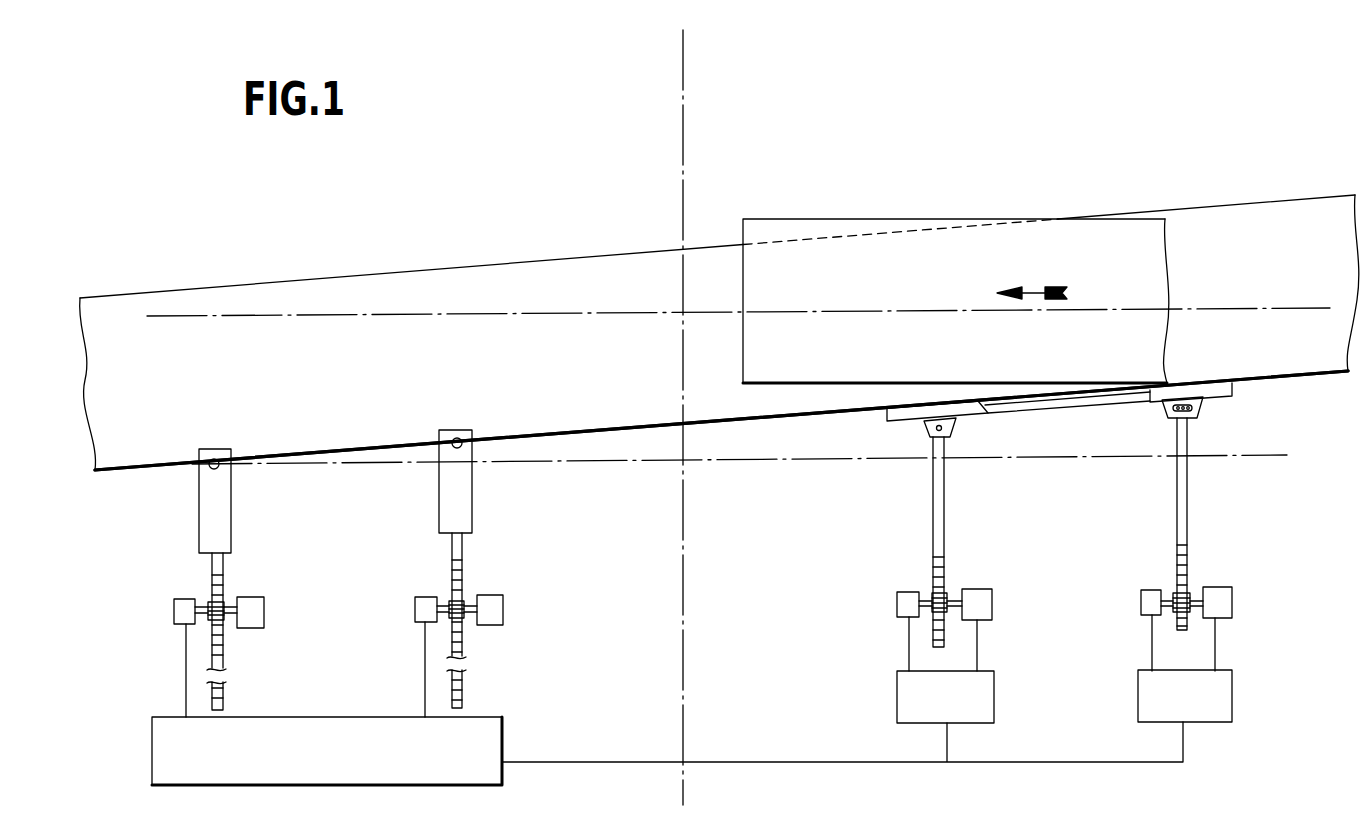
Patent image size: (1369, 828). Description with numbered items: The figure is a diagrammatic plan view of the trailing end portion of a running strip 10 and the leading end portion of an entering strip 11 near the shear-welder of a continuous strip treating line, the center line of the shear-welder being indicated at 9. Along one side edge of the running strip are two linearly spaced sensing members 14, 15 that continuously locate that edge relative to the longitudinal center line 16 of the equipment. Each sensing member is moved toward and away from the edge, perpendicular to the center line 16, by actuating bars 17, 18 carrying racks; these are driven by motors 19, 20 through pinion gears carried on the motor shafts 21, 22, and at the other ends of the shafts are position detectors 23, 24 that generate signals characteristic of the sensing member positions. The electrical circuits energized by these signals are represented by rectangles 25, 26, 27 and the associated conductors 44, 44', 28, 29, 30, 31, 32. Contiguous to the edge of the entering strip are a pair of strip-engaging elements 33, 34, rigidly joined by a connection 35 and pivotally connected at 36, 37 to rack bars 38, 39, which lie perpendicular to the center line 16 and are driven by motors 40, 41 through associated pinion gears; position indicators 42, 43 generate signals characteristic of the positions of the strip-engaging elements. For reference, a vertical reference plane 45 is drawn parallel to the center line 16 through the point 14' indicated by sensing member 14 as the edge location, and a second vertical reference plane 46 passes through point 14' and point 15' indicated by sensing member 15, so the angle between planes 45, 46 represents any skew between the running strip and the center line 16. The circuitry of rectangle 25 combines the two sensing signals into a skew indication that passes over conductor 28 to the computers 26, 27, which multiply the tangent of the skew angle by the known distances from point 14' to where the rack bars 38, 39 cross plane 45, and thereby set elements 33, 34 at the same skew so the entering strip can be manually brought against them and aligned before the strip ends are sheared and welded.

The center line of the shear-welder 9 is at (684, 131).
The running strip 10 is at (290, 291).
The entering strip 11 is at (860, 222).
The sensing member 14 is at (197, 501).
The point 14' is at (202, 440).
The sensing member 15 is at (434, 481).
The point 15' is at (437, 420).
The longitudinal center line 16 is at (528, 313).
The actuating bar 17 is at (224, 563).
The actuating bar 18 is at (451, 582).
The motor 19 is at (265, 612).
The motor 20 is at (504, 612).
The shaft 21 is at (206, 603).
The shaft 22 is at (470, 602).
The position detector 23 is at (174, 611).
The position detector 24 is at (415, 612).
The rectangle representing electrical circuits 25 is at (493, 717).
The computer 26 is at (897, 698).
The computer 27 is at (1234, 691).
The conductor 28 is at (725, 762).
The electrical conductor 29 is at (909, 640).
The electrical conductor 30 is at (978, 656).
The electrical conductor 31 is at (1152, 640).
The electrical conductor 32 is at (1216, 656).
The strip-engaging element 33 is at (932, 404).
The strip-engaging element 34 is at (1192, 386).
The connection 35 is at (1057, 412).
The pivotal connection 36 is at (925, 430).
The pivotal connection 37 is at (1201, 414).
The rack bar 38 is at (933, 525).
The rack bar 39 is at (1177, 518).
The motor 40 is at (984, 589).
The motor 41 is at (1230, 598).
The position indicator 42 is at (906, 592).
The position indicator 43 is at (1143, 594).
The electrical conductor 44 is at (157, 670).
The electrical conductor 44' is at (401, 669).
The vertical reference plane 45 is at (641, 462).
The vertical reference plane 46 is at (621, 426).